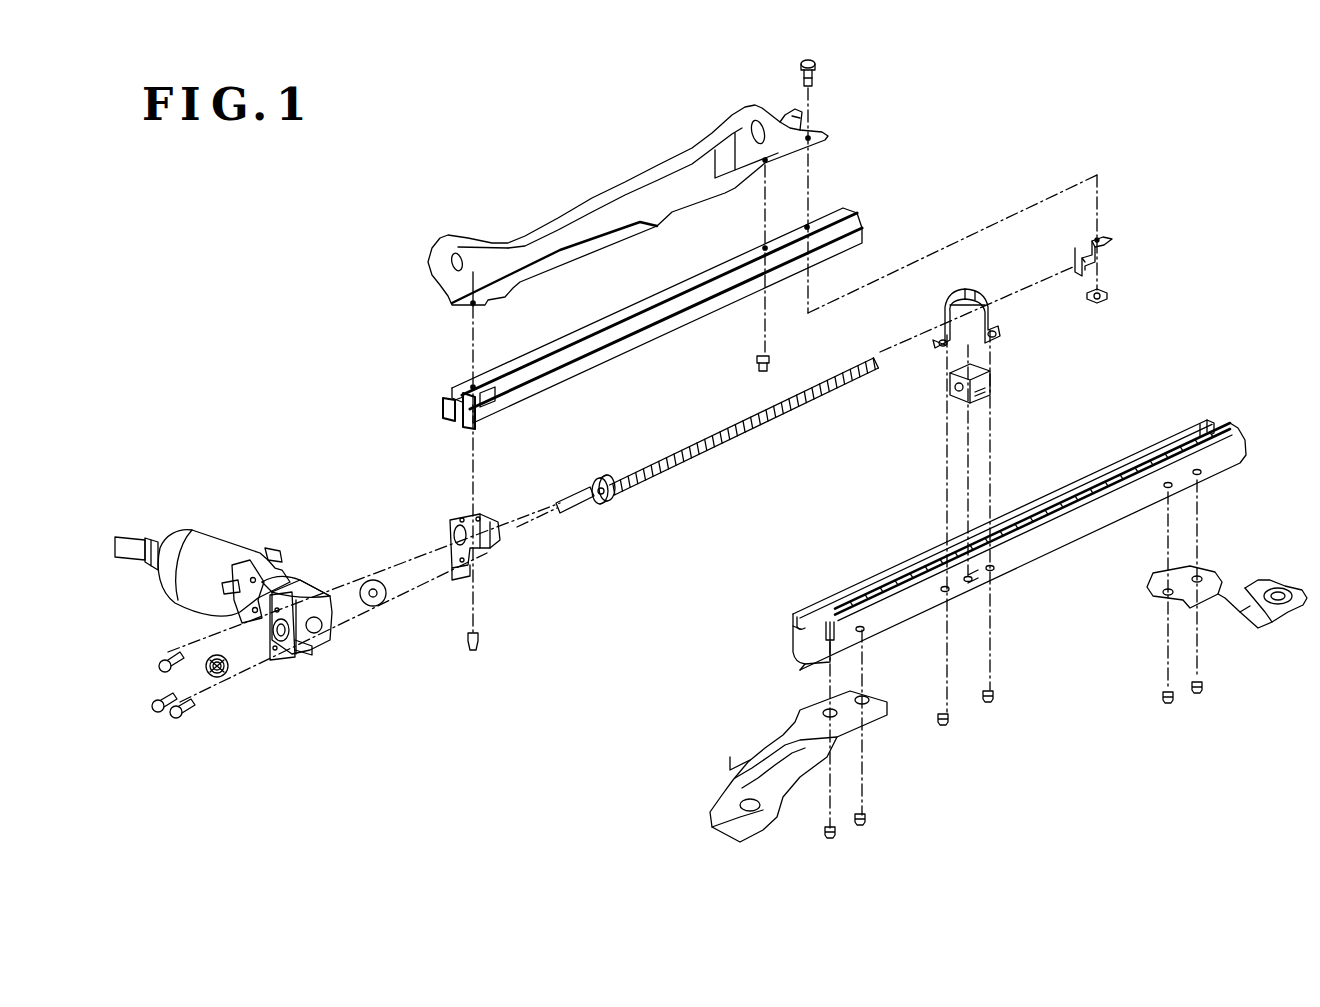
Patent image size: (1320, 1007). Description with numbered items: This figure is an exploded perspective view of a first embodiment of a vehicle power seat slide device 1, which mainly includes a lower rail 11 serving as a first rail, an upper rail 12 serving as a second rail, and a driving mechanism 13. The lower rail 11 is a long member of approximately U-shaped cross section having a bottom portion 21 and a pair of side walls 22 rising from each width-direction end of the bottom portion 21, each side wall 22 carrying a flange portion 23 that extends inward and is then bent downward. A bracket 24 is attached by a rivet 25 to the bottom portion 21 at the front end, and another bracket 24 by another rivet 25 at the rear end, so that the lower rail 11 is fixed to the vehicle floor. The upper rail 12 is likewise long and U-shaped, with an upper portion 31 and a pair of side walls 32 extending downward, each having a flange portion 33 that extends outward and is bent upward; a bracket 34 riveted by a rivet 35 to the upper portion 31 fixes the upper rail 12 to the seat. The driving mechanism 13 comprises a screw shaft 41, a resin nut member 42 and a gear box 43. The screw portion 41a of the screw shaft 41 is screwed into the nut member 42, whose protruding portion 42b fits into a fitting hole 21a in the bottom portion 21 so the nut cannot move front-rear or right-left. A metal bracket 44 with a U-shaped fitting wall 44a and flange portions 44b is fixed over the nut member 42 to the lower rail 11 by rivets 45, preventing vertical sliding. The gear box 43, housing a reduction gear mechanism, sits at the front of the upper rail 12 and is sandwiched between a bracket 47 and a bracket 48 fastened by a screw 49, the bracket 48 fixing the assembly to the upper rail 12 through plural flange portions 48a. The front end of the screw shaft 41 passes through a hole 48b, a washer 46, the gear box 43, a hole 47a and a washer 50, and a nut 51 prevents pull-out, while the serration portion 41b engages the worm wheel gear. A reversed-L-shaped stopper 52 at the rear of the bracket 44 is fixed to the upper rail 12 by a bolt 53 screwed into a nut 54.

The power seat slide device 1 is at (1008, 160).
The lower rail 11 is at (1240, 430).
The upper rail 12 is at (848, 210).
The driving mechanism 13 is at (207, 535).
The bottom portion 21 is at (806, 662).
The fitting hole 21a is at (975, 605).
The side walls 22 is at (790, 631).
The flange portion 23 is at (795, 620).
The bracket 24 is at (773, 742).
The rivet 25 is at (887, 828).
The upper portion 31 is at (562, 345).
The side walls 32 is at (447, 392).
The flange portion 33 is at (440, 407).
The bracket 34 is at (592, 208).
The rivet 35 is at (755, 360).
The screw shaft 41 is at (642, 487).
The screw portion 41a is at (706, 430).
The serration portion 41b is at (591, 510).
The nut member 42 is at (990, 383).
The protruding portion 42b is at (985, 400).
The gear box 43 is at (300, 590).
The bracket 44 is at (965, 298).
The fitting wall 44a is at (950, 303).
The flange portions 44b is at (1000, 312).
The rivet 45 is at (1010, 705).
The washer 46 is at (373, 580).
The bracket 47 is at (288, 655).
The hole 47a is at (312, 646).
The bracket 48 is at (458, 517).
The flange portions 48a is at (480, 515).
The hole 48b is at (468, 575).
The screw 49 is at (158, 656).
The washer 50 is at (228, 680).
The nut 51 is at (212, 652).
The stopper 52 is at (1080, 248).
The bolt 53 is at (818, 66).
The nut 54 is at (1106, 300).